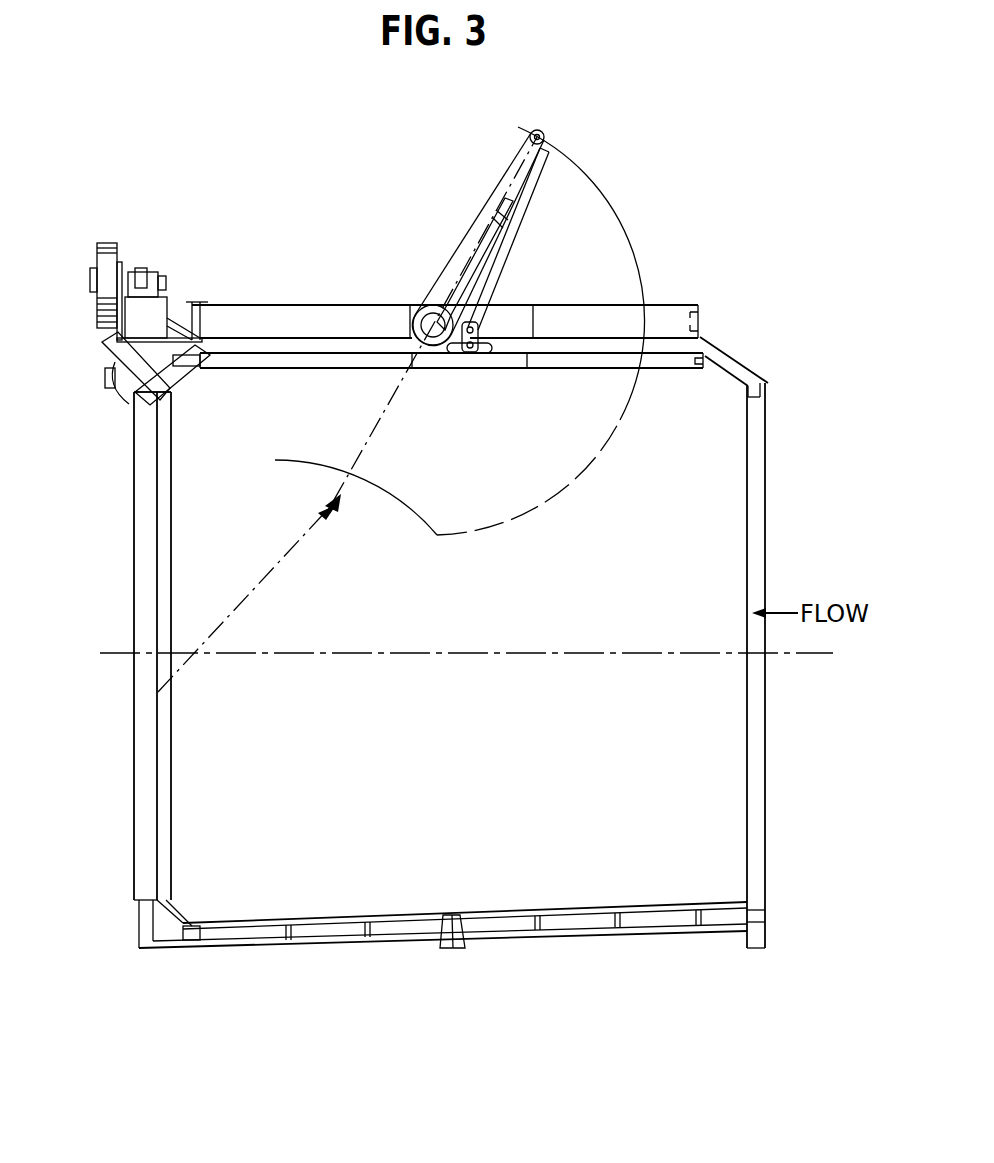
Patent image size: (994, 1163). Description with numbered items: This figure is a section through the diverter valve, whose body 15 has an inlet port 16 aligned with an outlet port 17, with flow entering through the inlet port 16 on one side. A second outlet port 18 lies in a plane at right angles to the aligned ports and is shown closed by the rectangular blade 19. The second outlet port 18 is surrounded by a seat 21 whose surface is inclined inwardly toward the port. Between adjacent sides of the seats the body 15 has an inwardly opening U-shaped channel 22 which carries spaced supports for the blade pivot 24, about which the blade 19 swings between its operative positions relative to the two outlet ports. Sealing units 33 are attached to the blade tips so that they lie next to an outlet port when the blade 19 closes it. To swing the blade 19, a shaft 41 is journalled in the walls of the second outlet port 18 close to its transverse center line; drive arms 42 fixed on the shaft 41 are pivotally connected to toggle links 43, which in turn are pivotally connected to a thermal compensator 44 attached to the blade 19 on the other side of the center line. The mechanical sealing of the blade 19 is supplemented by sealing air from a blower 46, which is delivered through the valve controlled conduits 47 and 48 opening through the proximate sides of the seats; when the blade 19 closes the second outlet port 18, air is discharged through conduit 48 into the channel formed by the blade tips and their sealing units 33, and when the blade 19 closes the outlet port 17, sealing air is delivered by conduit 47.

The body 15 is at (345, 938).
The inlet port 16 is at (755, 753).
The outlet port 17 is at (140, 802).
The second outlet port 18 is at (300, 342).
The blade 19 is at (545, 370).
The seat 21 is at (691, 344).
The U-shaped channel 22 is at (205, 332).
The blade pivot 24 is at (401, 409).
The sealing unit 33 is at (698, 370).
The shaft 41 is at (426, 308).
The drive arm 42 is at (490, 197).
The toggle link 43 is at (486, 280).
The thermal compensator 44 is at (478, 356).
The blower 46 is at (108, 242).
The valve controlled conduit 47 is at (140, 379).
The valve controlled conduit 48 is at (177, 320).